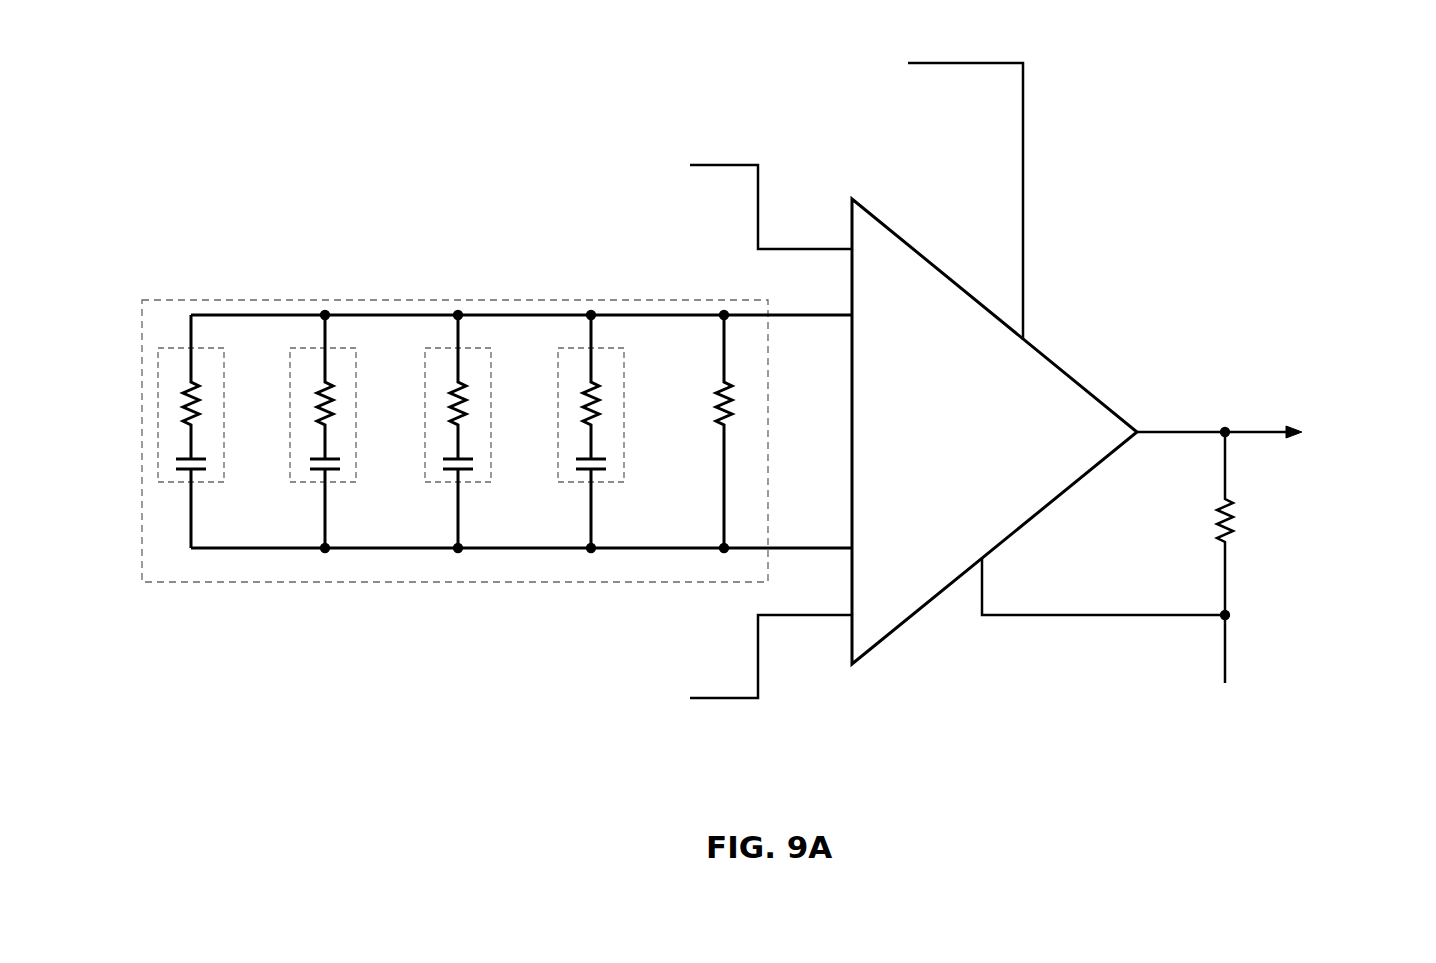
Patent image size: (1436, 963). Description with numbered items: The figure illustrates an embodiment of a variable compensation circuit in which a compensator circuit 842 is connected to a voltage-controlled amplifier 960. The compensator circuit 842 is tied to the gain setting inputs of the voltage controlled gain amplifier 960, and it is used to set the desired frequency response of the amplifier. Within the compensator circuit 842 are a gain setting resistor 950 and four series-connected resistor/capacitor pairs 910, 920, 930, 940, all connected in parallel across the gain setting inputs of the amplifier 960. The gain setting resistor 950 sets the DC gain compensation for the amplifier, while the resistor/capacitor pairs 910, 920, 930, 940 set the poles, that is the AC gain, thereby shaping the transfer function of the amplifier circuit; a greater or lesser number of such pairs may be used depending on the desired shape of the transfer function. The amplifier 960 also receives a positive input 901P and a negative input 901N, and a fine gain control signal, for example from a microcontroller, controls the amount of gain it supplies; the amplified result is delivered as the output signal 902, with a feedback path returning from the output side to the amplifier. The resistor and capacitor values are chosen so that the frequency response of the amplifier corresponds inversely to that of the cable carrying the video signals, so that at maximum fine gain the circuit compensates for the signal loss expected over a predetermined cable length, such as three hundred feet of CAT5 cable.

The compensator circuit 842 is at (213, 298).
The series-connected resistor/capacitor pair 910 is at (152, 413).
The series-connected resistor/capacitor pair 920 is at (303, 347).
The series-connected resistor/capacitor pair 930 is at (437, 347).
The series-connected resistor/capacitor pair 940 is at (570, 347).
The gain setting resistor 950 is at (729, 412).
The voltage-controlled amplifier 960 is at (1074, 376).
The positive input 901P is at (616, 148).
The negative input 901N is at (617, 722).
The output signal 902 is at (1371, 400).